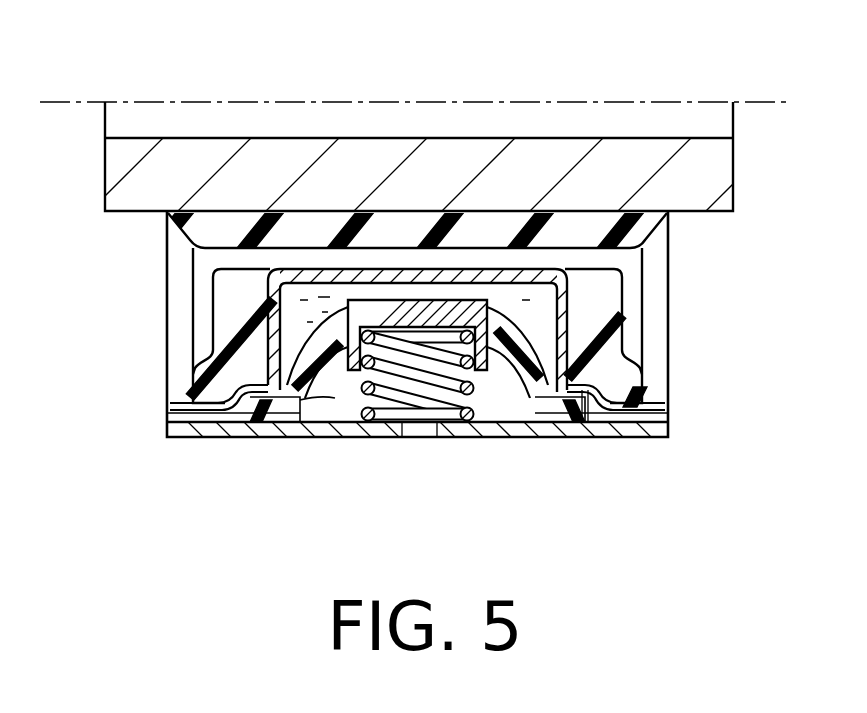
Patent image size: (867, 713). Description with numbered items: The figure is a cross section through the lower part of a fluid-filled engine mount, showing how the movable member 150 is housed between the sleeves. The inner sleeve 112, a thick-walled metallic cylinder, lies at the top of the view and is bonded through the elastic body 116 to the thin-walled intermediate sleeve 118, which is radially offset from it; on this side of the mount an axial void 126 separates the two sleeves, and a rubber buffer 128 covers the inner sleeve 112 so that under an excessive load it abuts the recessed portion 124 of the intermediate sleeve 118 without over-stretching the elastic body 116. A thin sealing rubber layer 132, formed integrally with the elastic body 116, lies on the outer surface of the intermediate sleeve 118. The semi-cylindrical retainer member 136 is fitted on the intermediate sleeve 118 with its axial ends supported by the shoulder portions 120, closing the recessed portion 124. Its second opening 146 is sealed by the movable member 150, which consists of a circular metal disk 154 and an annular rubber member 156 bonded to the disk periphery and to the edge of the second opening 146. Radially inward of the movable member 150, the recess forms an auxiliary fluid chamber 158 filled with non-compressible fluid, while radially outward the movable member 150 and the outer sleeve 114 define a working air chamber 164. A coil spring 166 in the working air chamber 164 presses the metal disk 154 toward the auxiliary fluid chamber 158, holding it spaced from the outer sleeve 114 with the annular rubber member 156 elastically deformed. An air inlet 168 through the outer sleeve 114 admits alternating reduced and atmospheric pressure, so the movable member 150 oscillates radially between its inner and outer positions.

The inner sleeve 112 is at (642, 158).
The outer sleeve 114 is at (563, 430).
The elastic body 116 is at (228, 318).
The intermediate sleeve 118 is at (185, 448).
The shoulder portions 120 is at (242, 423).
The recessed portion 124 is at (306, 283).
The axial void 126 is at (480, 275).
The rubber buffer 128 is at (208, 232).
The sealing rubber layer 132 is at (605, 433).
The retainer member 136 is at (278, 423).
The second opening 146 is at (313, 395).
The movable member 150 is at (530, 313).
The metal disk 154 is at (395, 305).
The annular rubber member 156 is at (516, 398).
The auxiliary fluid chamber 158 is at (303, 305).
The working air chamber 164 is at (336, 398).
The coil spring 166 is at (447, 422).
The air inlet 168 is at (412, 435).